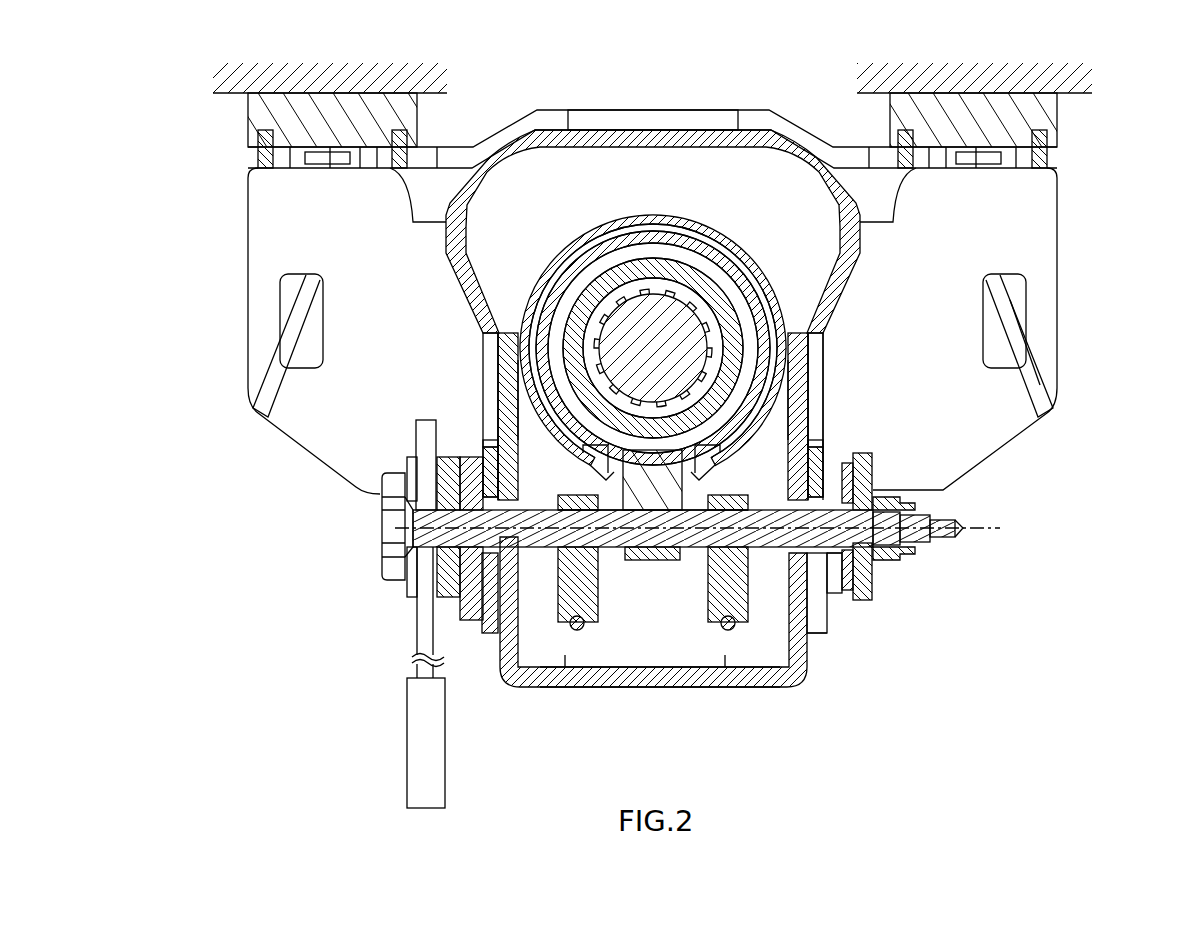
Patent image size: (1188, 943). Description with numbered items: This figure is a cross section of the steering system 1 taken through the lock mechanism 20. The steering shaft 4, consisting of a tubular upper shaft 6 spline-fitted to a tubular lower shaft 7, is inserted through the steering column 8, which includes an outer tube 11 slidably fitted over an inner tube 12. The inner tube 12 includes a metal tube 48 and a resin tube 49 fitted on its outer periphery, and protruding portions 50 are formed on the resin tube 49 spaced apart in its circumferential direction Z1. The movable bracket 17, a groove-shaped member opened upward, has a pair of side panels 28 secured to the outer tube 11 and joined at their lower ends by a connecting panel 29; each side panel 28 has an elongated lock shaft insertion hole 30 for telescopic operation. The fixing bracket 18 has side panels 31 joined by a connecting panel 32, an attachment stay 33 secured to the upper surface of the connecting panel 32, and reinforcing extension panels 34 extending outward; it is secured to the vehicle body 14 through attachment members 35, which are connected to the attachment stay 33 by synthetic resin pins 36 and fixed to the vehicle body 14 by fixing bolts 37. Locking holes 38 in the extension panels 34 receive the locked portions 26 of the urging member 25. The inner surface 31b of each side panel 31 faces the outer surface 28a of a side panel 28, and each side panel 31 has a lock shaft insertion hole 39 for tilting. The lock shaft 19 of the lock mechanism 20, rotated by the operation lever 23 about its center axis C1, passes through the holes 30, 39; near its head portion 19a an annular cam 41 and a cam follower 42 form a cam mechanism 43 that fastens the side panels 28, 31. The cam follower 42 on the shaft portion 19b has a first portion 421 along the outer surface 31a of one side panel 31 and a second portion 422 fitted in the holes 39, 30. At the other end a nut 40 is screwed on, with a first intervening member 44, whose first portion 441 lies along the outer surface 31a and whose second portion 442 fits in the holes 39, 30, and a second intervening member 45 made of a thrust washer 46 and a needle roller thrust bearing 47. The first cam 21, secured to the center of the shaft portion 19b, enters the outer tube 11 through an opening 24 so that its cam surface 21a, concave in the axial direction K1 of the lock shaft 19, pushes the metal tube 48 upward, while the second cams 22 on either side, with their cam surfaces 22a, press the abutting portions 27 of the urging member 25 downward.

The steering system 1 is at (1111, 191).
The steering shaft 4 is at (681, 264).
The upper shaft 6 is at (688, 300).
The lower shaft 7 is at (682, 320).
The steering column 8 is at (661, 206).
The outer tube 11 is at (552, 267).
The inner tube 12 is at (636, 184).
The vehicle body 14 is at (316, 74).
The movable bracket 17 is at (675, 700).
The fixing bracket 18 is at (836, 341).
The lock shaft 19 is at (377, 526).
The head portion 19a is at (392, 565).
The shaft portion 19b is at (610, 540).
The lock mechanism 20 is at (405, 587).
The first cam 21 is at (650, 515).
The cam surface 21a is at (700, 452).
The second cams 22 is at (578, 592).
The cam surface 22a is at (578, 632).
The operation lever 23 is at (420, 745).
The opening 24 is at (600, 470).
The urging member 25 is at (1035, 335).
The locked portions 26 is at (270, 385).
The abutting portions 27 is at (561, 652).
The side panels 28 is at (505, 392).
The outer surface 28a is at (505, 420).
The connecting panel 29 is at (645, 688).
The lock shaft insertion hole 30 is at (558, 655).
The side panels 31 is at (493, 365).
The outer surface 31a is at (488, 372).
The inner surface 31b is at (516, 356).
The connecting panel 32 is at (660, 120).
The attachment stay 33 is at (790, 126).
The reinforcing extension panels 34 is at (262, 232).
The attachment members 35 is at (252, 112).
The synthetic resin pins 36 is at (407, 138).
The fixing bolts 37 is at (330, 170).
The locking holes 38 is at (290, 293).
The lock shaft insertion hole 39 is at (492, 442).
The nut 40 is at (885, 560).
The cam 41 is at (440, 592).
The cam follower 42 is at (470, 588).
The cam mechanism 43 is at (352, 605).
The first intervening member 44 is at (844, 610).
The second intervening member 45 is at (1030, 450).
The thrust washer 46 is at (860, 480).
The needle roller thrust bearing 47 is at (854, 490).
The metal tube 48 is at (587, 290).
The resin tube 49 is at (612, 247).
The protruding portions 50 is at (750, 257).
The first portion 421 is at (440, 656).
The second portion 422 is at (490, 640).
The first portion 441 is at (850, 598).
The second portion 442 is at (818, 640).
The center axis C1 is at (976, 540).
The axial direction K1 is at (1082, 533).
The circumferential direction Z1 is at (764, 253).